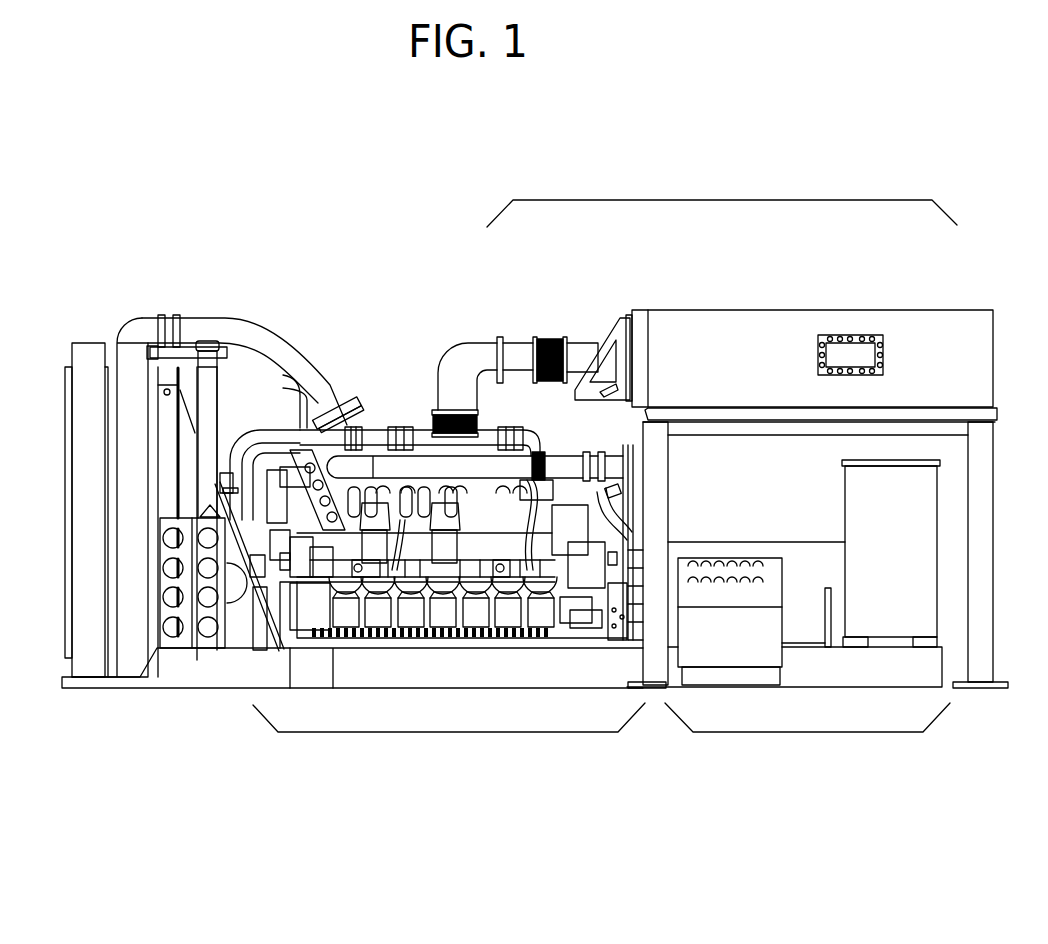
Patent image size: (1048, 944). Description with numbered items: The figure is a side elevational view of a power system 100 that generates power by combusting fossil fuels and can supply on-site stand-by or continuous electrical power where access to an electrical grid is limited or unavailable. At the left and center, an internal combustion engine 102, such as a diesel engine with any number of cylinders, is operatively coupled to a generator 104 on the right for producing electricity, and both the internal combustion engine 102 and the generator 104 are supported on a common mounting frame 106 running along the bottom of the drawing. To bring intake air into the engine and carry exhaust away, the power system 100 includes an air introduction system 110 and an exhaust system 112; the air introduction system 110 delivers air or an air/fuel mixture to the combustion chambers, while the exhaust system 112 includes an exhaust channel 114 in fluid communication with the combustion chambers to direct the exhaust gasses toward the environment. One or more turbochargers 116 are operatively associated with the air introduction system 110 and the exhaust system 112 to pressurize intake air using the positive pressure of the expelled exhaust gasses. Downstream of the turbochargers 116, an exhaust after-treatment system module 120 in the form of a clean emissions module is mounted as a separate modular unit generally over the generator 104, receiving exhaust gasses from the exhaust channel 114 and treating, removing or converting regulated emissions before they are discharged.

The power system 100 is at (398, 230).
The internal combustion engine 102 is at (450, 732).
The generator 104 is at (817, 732).
The common mounting frame 106 is at (188, 673).
The air introduction system 110 is at (545, 455).
The exhaust system 112 is at (737, 200).
The exhaust channel 114 is at (448, 349).
The turbocharger 116 is at (408, 447).
The exhaust after-treatment system module 120 is at (681, 298).